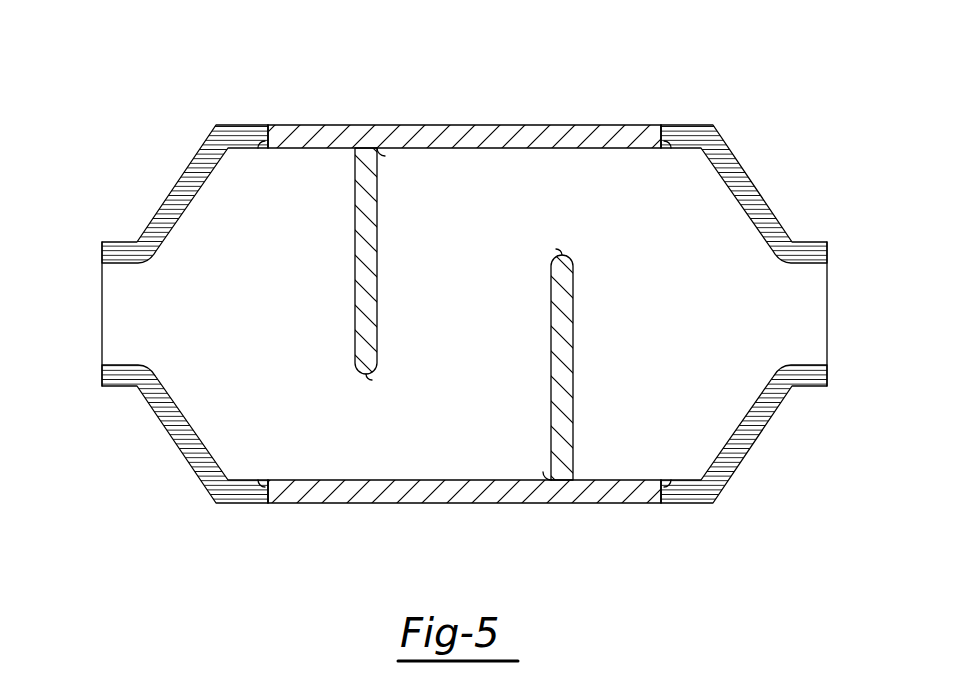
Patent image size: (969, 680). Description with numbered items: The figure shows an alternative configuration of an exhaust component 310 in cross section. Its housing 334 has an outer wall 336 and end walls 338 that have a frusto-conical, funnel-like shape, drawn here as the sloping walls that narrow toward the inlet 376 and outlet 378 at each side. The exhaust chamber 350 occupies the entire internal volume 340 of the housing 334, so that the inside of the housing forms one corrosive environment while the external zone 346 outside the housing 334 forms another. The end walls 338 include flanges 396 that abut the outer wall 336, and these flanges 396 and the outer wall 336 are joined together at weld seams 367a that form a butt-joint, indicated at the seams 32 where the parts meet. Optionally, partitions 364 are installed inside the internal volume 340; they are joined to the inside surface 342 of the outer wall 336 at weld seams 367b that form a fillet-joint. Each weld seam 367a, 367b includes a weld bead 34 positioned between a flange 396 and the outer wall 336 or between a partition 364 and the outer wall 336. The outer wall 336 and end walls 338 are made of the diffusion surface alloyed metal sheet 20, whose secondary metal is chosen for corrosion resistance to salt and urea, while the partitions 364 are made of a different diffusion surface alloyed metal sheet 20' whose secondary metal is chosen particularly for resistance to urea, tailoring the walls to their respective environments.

The exhaust component 310 is at (116, 161).
The end wall 338 is at (175, 171).
The flange 396 is at (247, 125).
The weld seam 367a is at (267, 122).
The outer wall 336 is at (378, 128).
The diffusion surface alloyed metal sheet 20 is at (452, 322).
The weld bead 34 is at (658, 131).
The external zone 346 is at (643, 72).
The housing 334 is at (713, 125).
The outlet 378 is at (805, 245).
The inlet 376 is at (125, 248).
The seam 32 is at (263, 143).
The weld seam 367b is at (352, 153).
The inside surface 342 is at (505, 152).
The diffusion surface alloyed metal sheet 20' is at (465, 302).
The partition 364 is at (352, 300).
The exhaust chamber 350 is at (224, 334).
The internal volume 340 is at (200, 398).